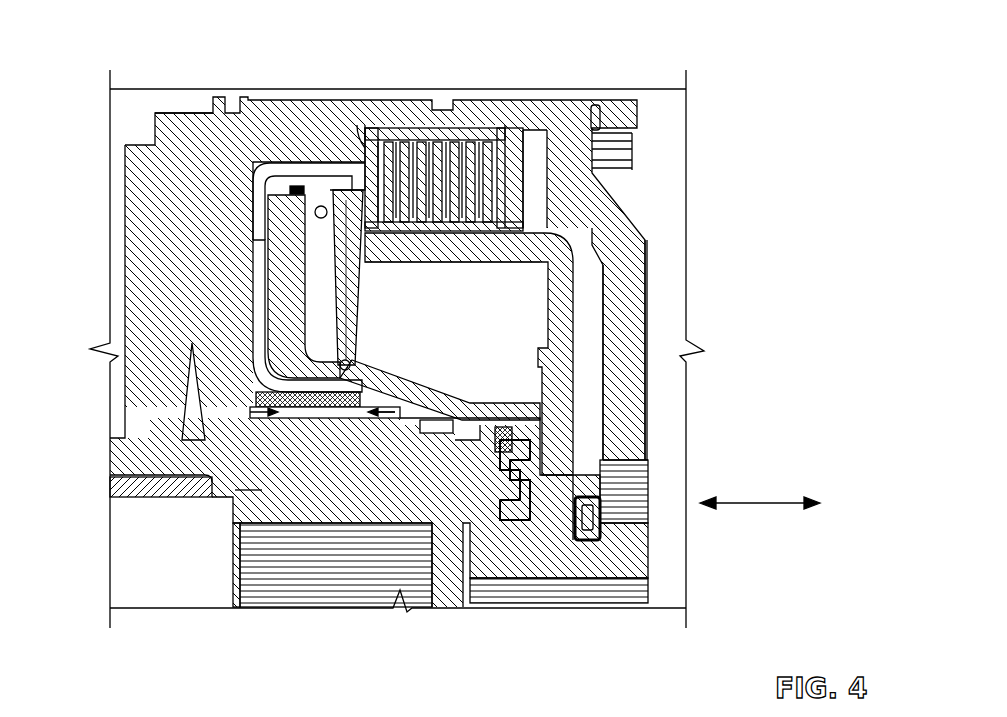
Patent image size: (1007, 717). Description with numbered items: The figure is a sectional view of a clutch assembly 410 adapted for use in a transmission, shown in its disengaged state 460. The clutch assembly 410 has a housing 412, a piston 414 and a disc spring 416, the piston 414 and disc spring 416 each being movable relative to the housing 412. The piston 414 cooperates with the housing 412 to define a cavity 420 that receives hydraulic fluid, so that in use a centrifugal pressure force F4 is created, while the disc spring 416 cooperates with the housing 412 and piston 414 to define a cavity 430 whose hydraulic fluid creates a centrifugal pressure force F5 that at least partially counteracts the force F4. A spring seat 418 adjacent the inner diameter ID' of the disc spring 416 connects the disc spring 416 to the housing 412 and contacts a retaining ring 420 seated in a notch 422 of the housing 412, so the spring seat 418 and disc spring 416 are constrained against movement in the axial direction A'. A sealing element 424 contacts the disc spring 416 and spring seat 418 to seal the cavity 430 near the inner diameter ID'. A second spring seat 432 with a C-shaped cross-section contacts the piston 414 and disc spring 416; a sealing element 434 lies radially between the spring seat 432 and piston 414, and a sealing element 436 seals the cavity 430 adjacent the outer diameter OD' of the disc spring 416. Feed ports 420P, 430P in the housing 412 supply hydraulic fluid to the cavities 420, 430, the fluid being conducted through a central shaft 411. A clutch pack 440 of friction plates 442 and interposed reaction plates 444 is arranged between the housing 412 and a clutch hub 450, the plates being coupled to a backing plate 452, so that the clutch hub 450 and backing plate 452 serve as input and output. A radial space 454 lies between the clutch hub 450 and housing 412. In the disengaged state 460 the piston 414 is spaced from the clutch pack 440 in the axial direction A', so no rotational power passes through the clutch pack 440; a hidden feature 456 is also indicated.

The clutch assembly 410 is at (568, 85).
The central shaft 411 is at (308, 563).
The housing 412 is at (190, 262).
The piston 414 is at (335, 275).
The disc spring 416 is at (335, 362).
The spring seat 418 is at (485, 440).
The cavity 420 is at (300, 440).
The feed port 420P is at (237, 533).
The notch 422 is at (590, 452).
The sealing element 424 is at (292, 445).
The cavity 430 is at (420, 428).
The feed port 430P is at (466, 425).
The spring seat 432 is at (308, 212).
The sealing element 434 is at (262, 160).
The sealing element 436 is at (300, 188).
The clutch pack 440 is at (489, 126).
The friction plates 442 is at (357, 138).
The reaction plates 444 is at (422, 147).
The clutch hub 450 is at (590, 245).
The backing plate 452 is at (625, 338).
The radial space 454 is at (530, 296).
The hidden passage 456 is at (500, 328).
The disengaged state 460 is at (272, 283).
The outer diameter OD' is at (282, 128).
The inner diameter ID' is at (212, 442).
The centrifugal pressure force F4 is at (245, 487).
The centrifugal pressure force F5 is at (352, 440).
The axial direction A' is at (760, 476).